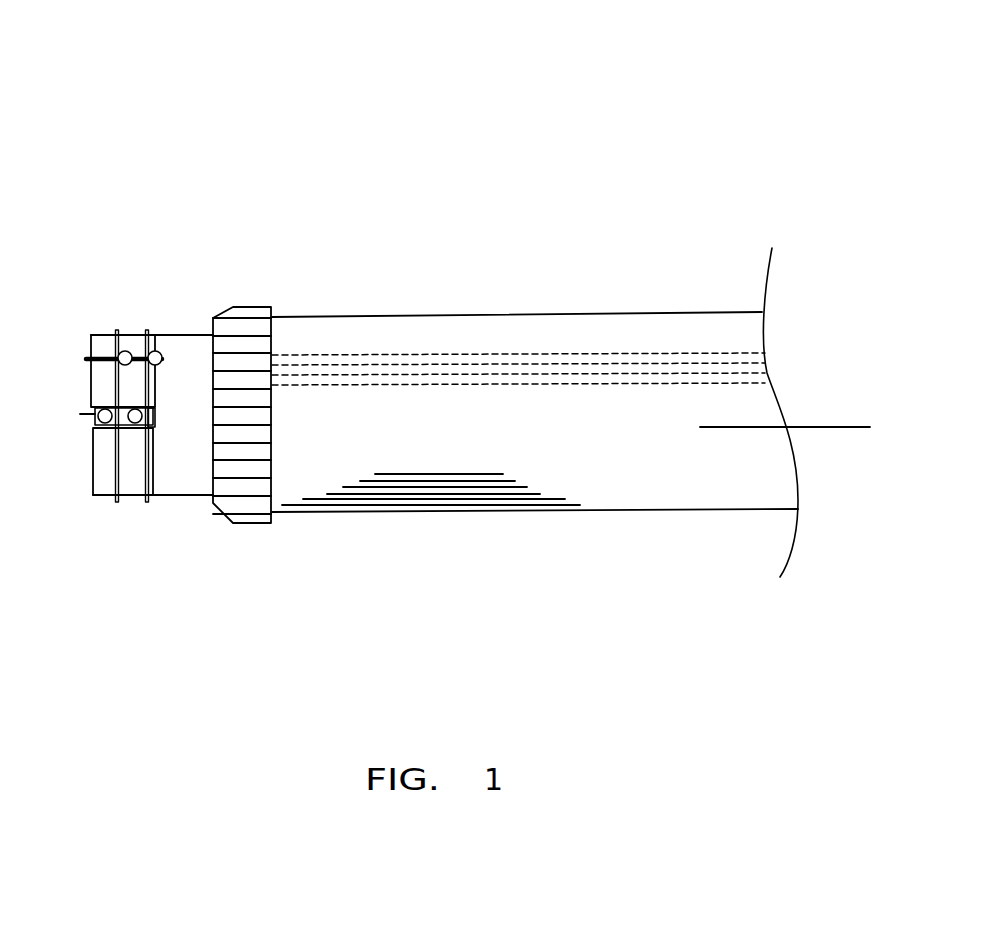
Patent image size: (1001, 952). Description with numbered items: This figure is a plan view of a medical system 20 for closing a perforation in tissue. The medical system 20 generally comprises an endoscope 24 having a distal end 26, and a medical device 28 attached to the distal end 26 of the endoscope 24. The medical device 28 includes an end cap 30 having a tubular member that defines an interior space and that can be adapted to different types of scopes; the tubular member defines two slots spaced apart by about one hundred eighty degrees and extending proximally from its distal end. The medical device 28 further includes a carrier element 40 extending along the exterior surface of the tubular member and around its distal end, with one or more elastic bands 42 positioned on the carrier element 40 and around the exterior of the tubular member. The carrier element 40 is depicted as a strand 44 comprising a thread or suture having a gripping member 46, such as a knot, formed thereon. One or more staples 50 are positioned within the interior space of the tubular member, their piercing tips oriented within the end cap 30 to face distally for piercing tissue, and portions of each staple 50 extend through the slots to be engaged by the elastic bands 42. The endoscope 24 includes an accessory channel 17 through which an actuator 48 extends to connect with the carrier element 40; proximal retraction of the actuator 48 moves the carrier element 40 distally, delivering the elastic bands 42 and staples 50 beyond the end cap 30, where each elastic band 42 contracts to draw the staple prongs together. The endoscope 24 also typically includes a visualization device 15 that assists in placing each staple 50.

The visualization device 15 is at (797, 427).
The accessory channel 17 is at (535, 353).
The medical system 20 is at (492, 80).
The endoscope 24 is at (675, 325).
The distal end 26 is at (287, 323).
The medical device 28 is at (203, 180).
The end cap 30 is at (180, 487).
The carrier element 40 is at (86, 357).
The elastic band 42 is at (116, 332).
The strand 44 is at (136, 355).
The gripping member 46 is at (125, 351).
The actuator 48 is at (423, 363).
The staple 50 is at (99, 420).